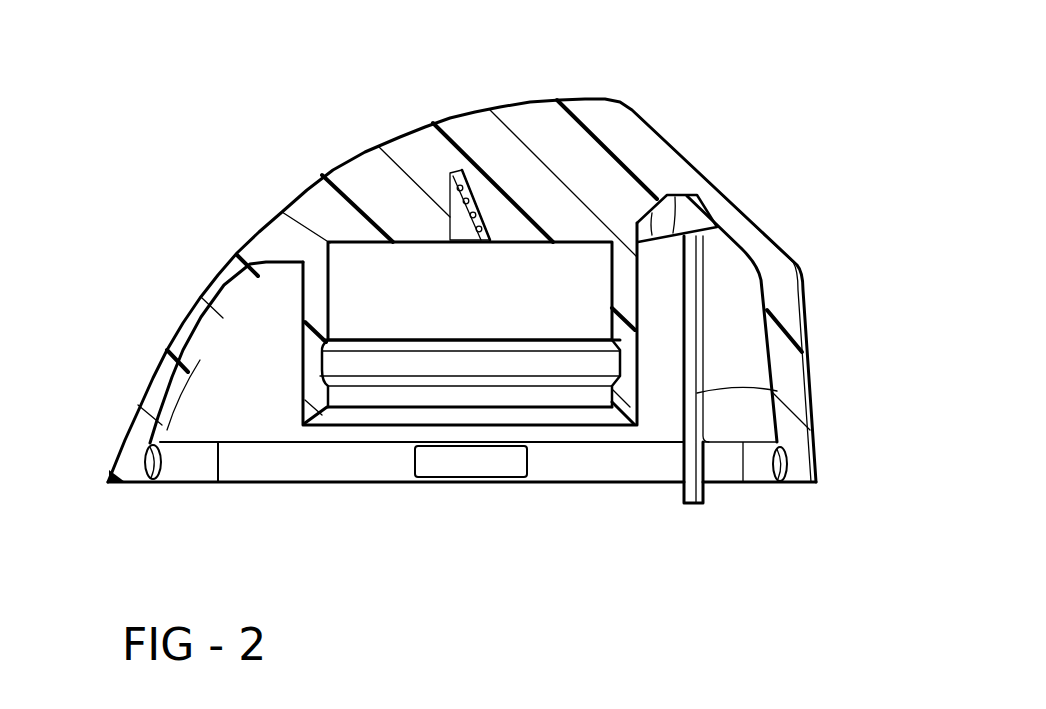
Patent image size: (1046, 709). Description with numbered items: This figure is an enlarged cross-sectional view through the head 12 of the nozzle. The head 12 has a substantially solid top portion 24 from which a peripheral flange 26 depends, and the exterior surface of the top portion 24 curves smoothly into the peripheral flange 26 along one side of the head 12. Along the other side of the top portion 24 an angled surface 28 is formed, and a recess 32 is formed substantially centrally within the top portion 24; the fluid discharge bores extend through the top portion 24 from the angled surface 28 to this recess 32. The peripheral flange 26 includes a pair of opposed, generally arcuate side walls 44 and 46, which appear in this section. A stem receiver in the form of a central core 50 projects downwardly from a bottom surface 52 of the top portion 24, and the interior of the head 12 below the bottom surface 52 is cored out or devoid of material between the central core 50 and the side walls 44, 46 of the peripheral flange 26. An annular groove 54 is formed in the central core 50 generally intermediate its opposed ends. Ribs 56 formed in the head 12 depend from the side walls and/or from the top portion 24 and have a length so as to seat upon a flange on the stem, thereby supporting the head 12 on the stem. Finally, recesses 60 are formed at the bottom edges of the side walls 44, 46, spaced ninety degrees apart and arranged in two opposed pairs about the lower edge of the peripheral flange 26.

The head 12 is at (374, 132).
The top portion 24 is at (517, 120).
The peripheral flange 26 is at (224, 248).
The angled surface 28 is at (738, 187).
The recess 32 is at (475, 233).
The arcuate side wall 44 is at (798, 338).
The arcuate side wall 46 is at (162, 372).
The central core 50 is at (633, 400).
The bottom surface 52 is at (547, 243).
The annular groove 54 is at (323, 361).
The ribs 56 is at (777, 391).
The recesses 60 is at (162, 468).